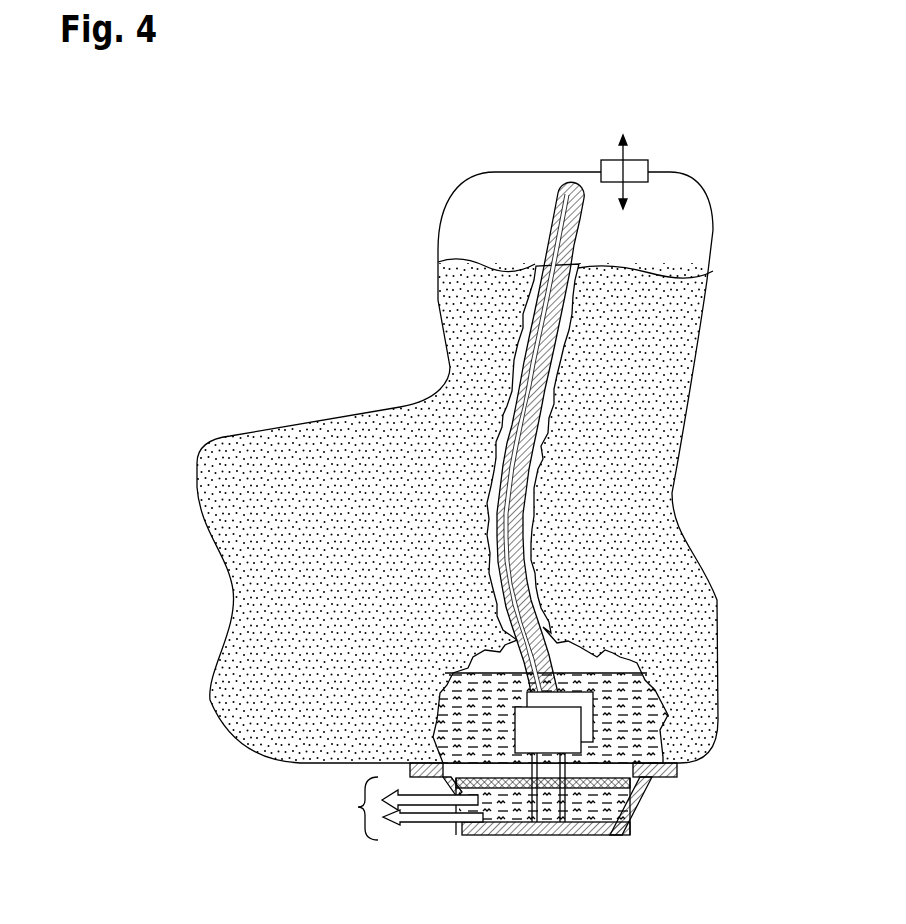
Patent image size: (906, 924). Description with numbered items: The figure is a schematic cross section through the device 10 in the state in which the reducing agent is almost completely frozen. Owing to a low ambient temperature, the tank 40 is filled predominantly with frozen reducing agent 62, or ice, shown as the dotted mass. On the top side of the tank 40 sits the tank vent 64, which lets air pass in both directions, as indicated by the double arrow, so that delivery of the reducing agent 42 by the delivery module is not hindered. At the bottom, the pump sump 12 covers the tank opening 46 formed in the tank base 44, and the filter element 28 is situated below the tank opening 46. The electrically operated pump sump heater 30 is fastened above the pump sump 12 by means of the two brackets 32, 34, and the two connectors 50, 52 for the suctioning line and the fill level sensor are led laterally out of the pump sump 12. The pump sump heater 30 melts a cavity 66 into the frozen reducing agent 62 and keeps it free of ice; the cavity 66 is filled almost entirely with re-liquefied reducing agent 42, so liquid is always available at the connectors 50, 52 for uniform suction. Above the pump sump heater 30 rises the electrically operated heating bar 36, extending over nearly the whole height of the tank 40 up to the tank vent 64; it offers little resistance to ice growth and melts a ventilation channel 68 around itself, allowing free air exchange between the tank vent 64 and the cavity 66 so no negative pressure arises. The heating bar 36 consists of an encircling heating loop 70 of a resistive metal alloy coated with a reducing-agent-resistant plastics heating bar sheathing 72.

The device 10 is at (343, 143).
The pump sump 12 is at (607, 833).
The filter element 28 is at (623, 807).
The pump sump heater 30 is at (532, 742).
The bracket 32 is at (546, 823).
The bracket 34 is at (562, 812).
The heating bar 36 is at (543, 247).
The tank 40 is at (243, 437).
The reducing agent 42 is at (650, 765).
The tank base 44 is at (347, 760).
The tank opening 46 is at (508, 763).
The connector 50 is at (358, 807).
The connector 52 is at (433, 817).
The frozen reducing agent 62 is at (323, 440).
The tank vent 64 is at (606, 162).
The cavity 66 is at (620, 657).
The ventilation channel 68 is at (557, 365).
The heating loop 70 is at (556, 192).
The heating bar sheathing 72 is at (563, 213).